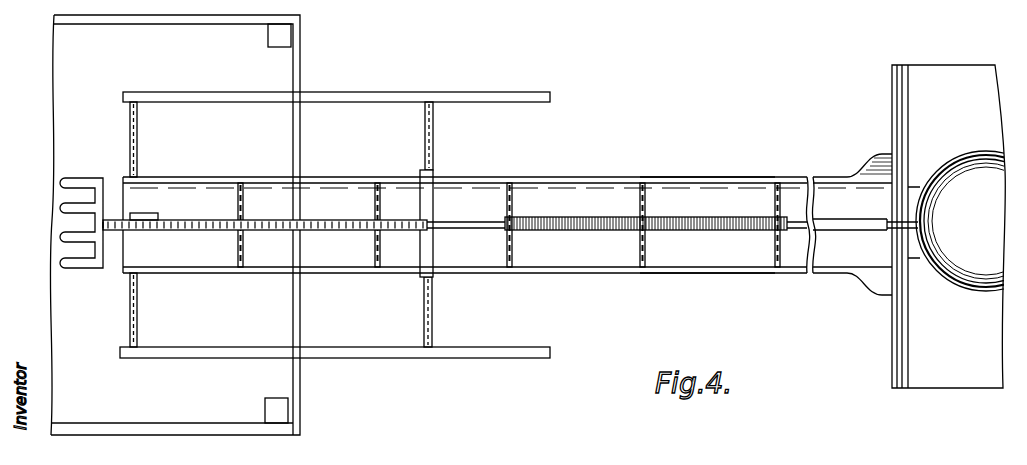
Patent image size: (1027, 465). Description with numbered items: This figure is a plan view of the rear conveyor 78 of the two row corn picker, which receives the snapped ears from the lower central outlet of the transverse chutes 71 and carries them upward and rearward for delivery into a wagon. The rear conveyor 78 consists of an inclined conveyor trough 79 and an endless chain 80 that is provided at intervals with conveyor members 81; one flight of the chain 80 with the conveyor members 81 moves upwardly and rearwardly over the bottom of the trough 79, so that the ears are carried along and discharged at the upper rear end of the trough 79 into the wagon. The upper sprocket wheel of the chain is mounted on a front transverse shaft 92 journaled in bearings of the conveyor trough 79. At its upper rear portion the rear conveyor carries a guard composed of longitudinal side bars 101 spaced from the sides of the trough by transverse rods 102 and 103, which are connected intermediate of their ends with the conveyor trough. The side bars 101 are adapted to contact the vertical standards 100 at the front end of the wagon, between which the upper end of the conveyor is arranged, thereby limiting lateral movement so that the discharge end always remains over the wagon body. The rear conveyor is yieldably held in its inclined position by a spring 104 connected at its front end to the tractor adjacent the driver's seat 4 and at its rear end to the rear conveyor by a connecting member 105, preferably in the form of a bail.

The seat 4 is at (971, 221).
The transverse chutes 71 is at (948, 226).
The rear conveyor 78 is at (684, 279).
The inclined conveyor trough 79 is at (580, 277).
The endless chain 80 is at (343, 231).
The conveyor members 81 is at (87, 270).
The front transverse shaft 92 is at (140, 213).
The vertical standards 100 is at (284, 34).
The longitudinal side bars 101 is at (393, 97).
The transverse rod 102 is at (433, 138).
The transverse rod 103 is at (130, 132).
The spring 104 is at (573, 221).
The connecting member 105 is at (423, 262).